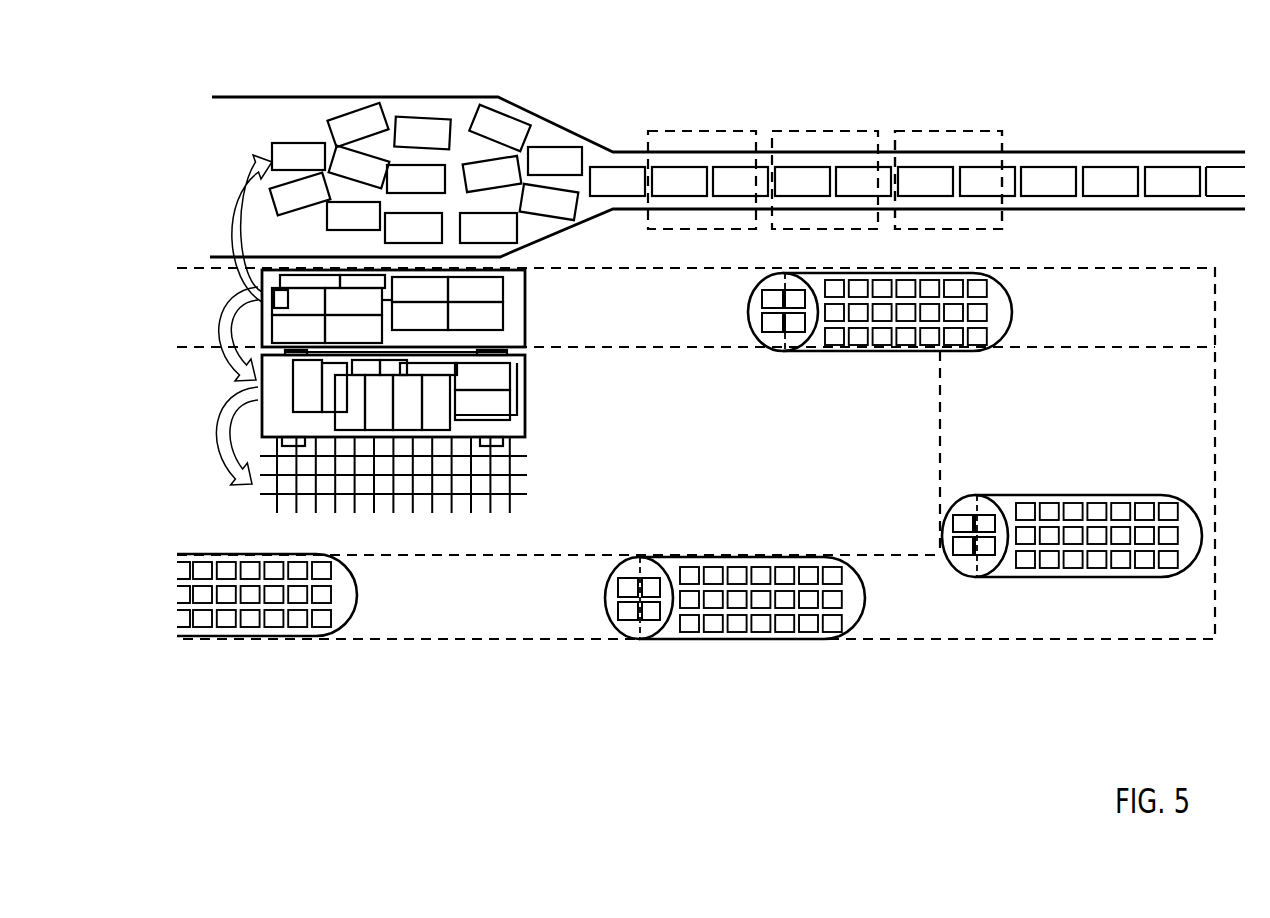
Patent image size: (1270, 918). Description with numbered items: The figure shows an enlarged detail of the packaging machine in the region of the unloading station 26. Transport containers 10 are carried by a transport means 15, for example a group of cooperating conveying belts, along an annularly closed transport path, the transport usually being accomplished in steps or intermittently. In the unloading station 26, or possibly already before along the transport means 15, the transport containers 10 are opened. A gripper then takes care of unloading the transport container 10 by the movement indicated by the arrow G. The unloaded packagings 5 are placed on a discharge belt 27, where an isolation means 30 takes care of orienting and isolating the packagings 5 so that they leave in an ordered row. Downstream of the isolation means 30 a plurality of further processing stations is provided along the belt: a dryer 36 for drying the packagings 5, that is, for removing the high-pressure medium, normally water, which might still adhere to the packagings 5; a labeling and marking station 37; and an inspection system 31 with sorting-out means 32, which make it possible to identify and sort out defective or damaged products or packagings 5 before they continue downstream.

The packaging 5 is at (284, 142).
The discharge belt 27 is at (317, 110).
The isolation means 30 is at (538, 114).
The dryer 36 is at (668, 131).
The labeling and marking station 37 is at (800, 131).
The inspection system 31 is at (940, 131).
The sorting-out means 32 is at (948, 180).
The transport container 10 is at (530, 299).
The unloading station 26 is at (543, 364).
The transport means 15 is at (955, 420).
The gripper movement arrow G is at (244, 320).